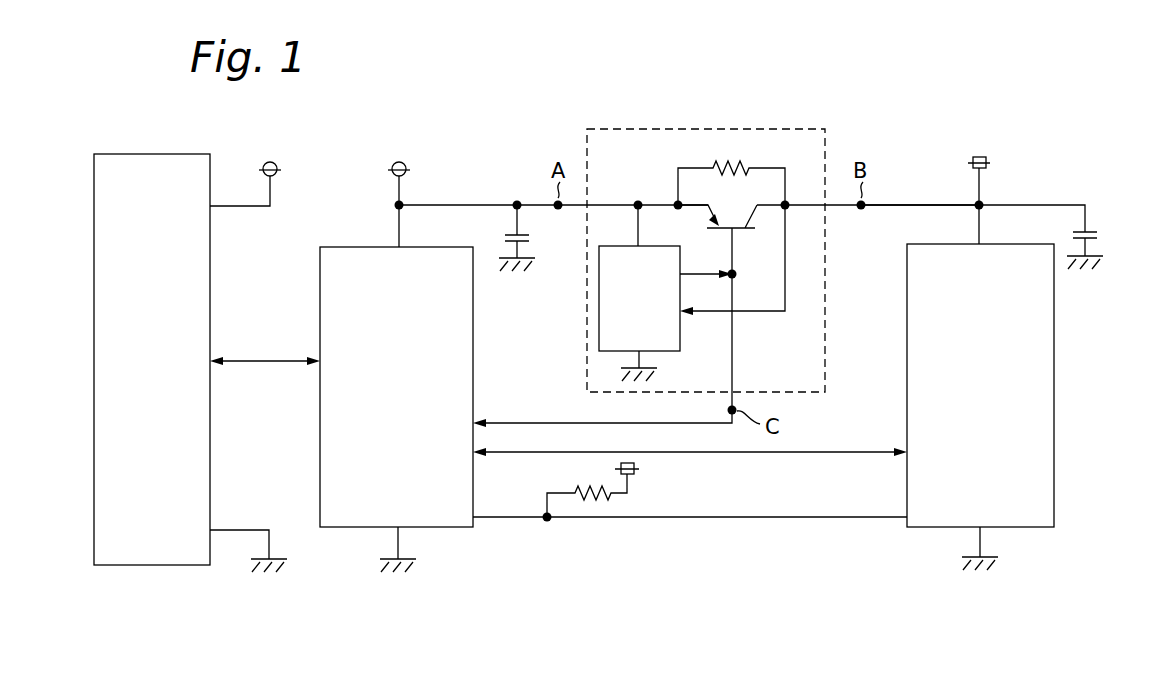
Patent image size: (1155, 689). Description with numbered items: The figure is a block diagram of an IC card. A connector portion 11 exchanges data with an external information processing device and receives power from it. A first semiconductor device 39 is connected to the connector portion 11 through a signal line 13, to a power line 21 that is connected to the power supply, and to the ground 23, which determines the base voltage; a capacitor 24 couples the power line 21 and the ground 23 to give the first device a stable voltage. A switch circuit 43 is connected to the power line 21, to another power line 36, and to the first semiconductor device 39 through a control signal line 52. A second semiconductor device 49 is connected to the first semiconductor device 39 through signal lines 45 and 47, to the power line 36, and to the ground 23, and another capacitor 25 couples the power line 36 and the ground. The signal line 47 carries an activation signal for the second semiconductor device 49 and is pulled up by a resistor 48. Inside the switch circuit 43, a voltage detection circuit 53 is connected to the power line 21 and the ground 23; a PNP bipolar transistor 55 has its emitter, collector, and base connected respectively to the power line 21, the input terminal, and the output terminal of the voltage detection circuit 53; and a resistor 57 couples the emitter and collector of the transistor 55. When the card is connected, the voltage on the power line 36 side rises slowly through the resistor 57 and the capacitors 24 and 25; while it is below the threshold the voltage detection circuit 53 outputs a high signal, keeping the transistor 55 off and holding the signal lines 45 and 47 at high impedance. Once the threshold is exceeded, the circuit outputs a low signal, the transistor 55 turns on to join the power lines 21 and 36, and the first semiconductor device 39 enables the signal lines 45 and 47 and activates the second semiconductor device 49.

The connector portion 11 is at (210, 292).
The signal line 13 is at (268, 366).
The power line 21 is at (271, 183).
The ground 23 is at (284, 562).
The capacitor 24 is at (535, 237).
The capacitor 25 is at (1099, 234).
The power line 36 is at (938, 198).
The first semiconductor device 39 is at (473, 347).
The switch circuit 43 is at (715, 127).
The signal line 45 is at (817, 451).
The signal line 47 is at (817, 516).
The resistor 48 is at (599, 488).
The second semiconductor device 49 is at (1054, 363).
The control signal line 52 is at (604, 424).
The voltage detection circuit 53 is at (680, 328).
The PNP bipolar transistor 55 is at (733, 213).
The resistor 57 is at (738, 166).